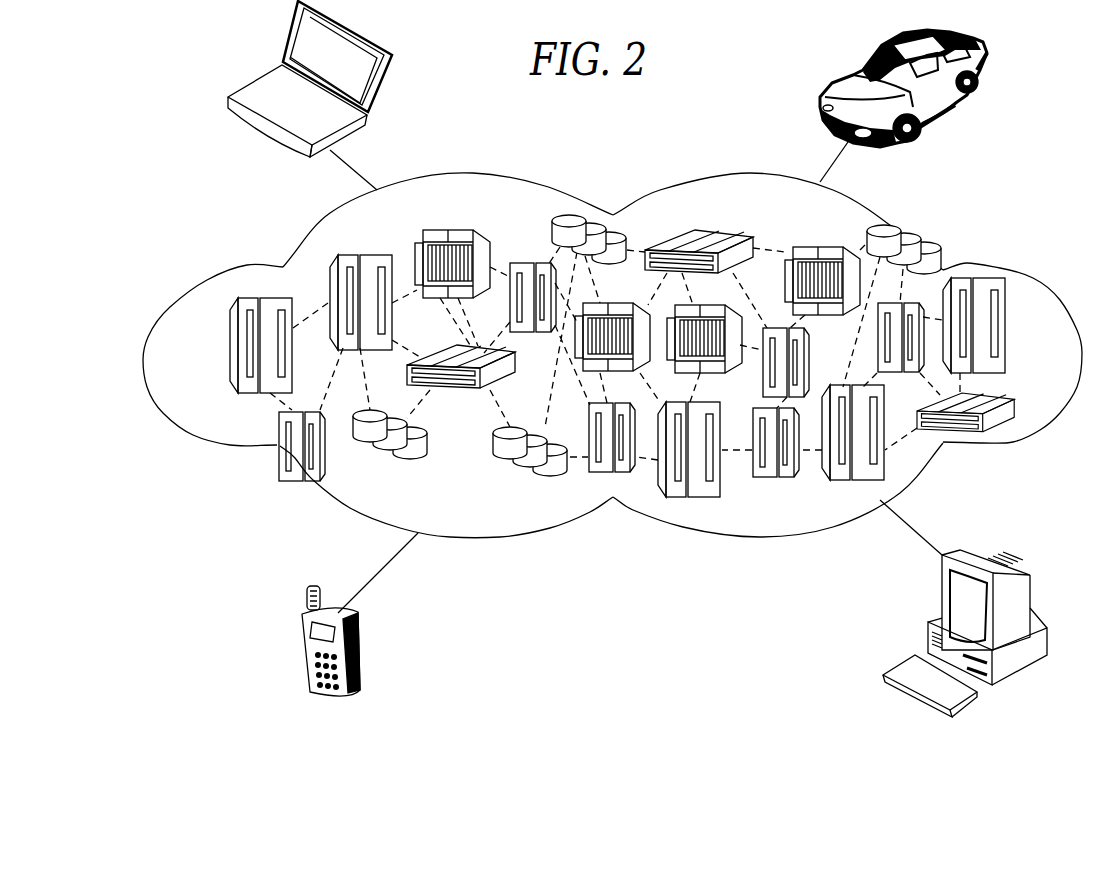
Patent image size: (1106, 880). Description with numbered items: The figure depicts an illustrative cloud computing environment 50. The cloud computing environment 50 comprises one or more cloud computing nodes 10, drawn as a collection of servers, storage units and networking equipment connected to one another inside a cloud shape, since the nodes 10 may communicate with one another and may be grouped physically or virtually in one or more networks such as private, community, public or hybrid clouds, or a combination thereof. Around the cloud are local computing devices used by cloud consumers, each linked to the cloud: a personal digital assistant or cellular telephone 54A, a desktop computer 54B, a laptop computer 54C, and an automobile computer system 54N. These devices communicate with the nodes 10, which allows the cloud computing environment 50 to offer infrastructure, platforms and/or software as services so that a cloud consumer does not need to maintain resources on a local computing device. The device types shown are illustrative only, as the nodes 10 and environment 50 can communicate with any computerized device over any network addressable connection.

The cloud computing environment 50 is at (1033, 275).
The cloud computing node 10 is at (997, 429).
The personal digital assistant or cellular telephone 54A is at (358, 617).
The desktop computer 54B is at (935, 622).
The laptop computer 54C is at (263, 72).
The automobile computer system 54N is at (839, 85).